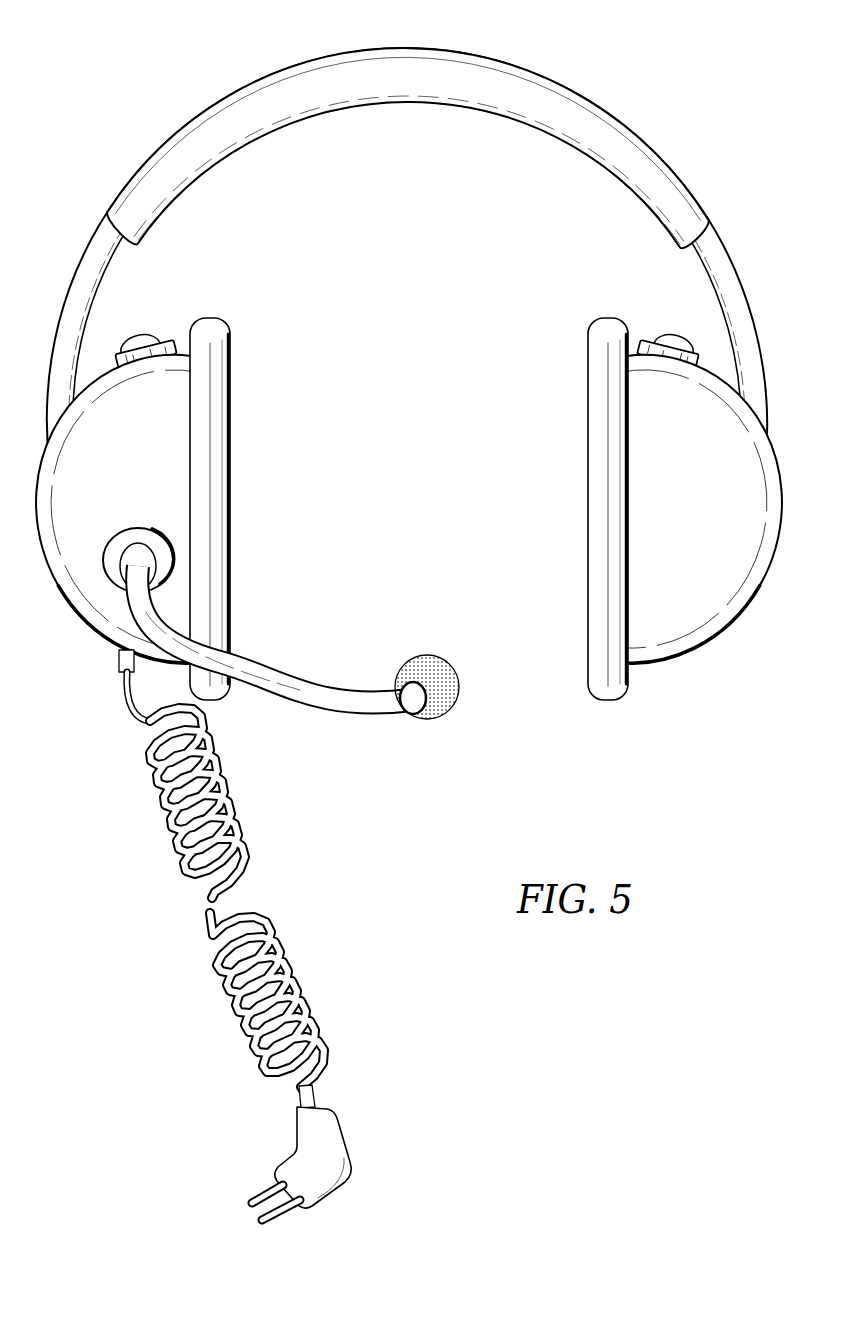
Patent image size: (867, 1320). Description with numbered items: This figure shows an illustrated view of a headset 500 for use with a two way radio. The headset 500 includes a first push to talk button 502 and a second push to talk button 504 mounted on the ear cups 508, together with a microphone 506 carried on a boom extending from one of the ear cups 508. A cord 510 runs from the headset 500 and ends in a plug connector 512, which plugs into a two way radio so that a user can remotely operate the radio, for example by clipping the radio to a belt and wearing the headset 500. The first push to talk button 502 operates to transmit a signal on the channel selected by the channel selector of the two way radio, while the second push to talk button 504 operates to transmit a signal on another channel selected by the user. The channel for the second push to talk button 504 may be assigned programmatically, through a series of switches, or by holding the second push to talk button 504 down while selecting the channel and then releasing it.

The headset 500 is at (638, 96).
The first push to talk button 502 is at (150, 335).
The second push to talk button 504 is at (664, 337).
The microphone 506 is at (452, 700).
The ear cups 508 is at (106, 483).
The cord 510 is at (290, 937).
The plug connector 512 is at (325, 1142).